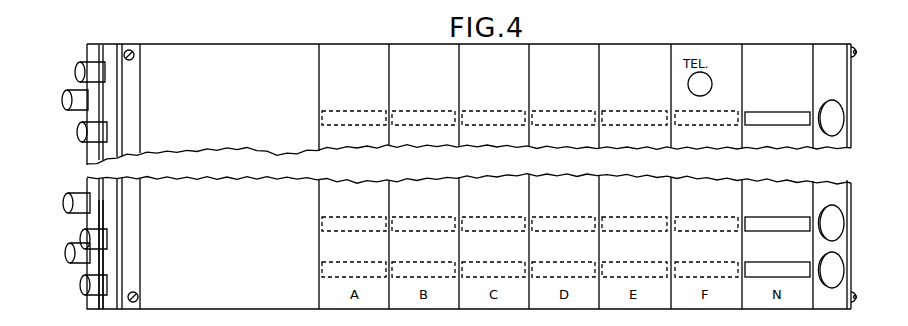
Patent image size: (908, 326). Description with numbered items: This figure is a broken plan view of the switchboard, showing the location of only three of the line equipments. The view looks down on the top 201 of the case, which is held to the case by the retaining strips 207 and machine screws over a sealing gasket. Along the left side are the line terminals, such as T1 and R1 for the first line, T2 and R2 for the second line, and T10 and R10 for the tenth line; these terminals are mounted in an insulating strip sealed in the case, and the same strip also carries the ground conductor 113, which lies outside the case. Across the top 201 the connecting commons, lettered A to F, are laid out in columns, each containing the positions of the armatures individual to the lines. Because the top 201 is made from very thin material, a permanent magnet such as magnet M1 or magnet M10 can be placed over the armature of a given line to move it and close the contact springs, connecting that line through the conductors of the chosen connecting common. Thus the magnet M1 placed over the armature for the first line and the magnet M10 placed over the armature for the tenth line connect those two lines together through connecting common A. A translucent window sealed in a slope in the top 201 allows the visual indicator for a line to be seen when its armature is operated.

The top 201 is at (231, 95).
The retaining strips 207 is at (136, 277).
The ground conductor 113 is at (95, 302).
The terminal R10 is at (62, 100).
The terminal T10 is at (76, 131).
The terminal R2 is at (63, 205).
The terminal T2 is at (80, 239).
The terminal R1 is at (65, 255).
The terminal T1 is at (80, 285).
The permanent magnet M10 is at (788, 120).
The permanent magnet M1 is at (782, 268).